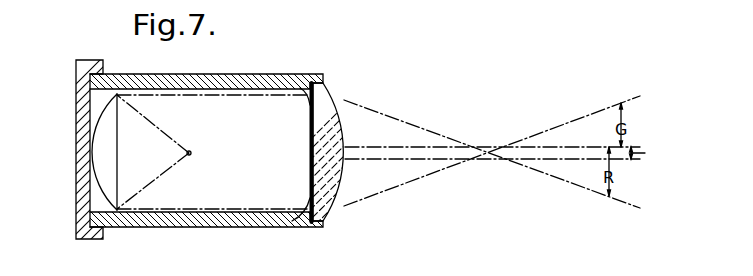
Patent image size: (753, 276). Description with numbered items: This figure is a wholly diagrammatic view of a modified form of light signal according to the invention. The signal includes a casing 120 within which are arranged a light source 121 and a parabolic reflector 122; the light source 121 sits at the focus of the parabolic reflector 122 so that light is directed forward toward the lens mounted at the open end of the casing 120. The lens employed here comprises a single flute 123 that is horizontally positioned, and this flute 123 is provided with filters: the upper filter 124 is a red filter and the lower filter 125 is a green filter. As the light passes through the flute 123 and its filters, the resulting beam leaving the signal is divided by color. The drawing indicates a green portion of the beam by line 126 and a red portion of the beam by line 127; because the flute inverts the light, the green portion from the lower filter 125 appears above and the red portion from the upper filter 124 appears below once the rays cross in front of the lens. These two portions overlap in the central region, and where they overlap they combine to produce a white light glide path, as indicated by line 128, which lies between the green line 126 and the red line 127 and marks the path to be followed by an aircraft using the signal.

The casing 120 is at (105, 77).
The light source 121 is at (189, 153).
The parabolic reflector 122 is at (100, 127).
The single flute 123 is at (337, 113).
The upper filter 124 is at (309, 101).
The lower filter 125 is at (302, 207).
The green portion line 126 is at (620, 117).
The red portion line 127 is at (608, 189).
The white light glide path line 128 is at (634, 150).